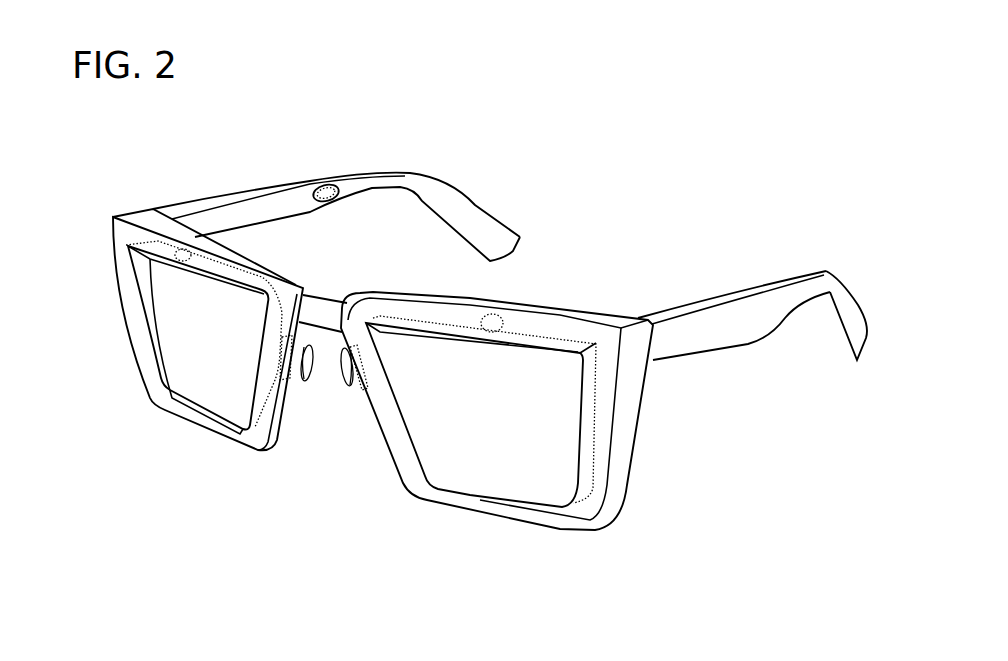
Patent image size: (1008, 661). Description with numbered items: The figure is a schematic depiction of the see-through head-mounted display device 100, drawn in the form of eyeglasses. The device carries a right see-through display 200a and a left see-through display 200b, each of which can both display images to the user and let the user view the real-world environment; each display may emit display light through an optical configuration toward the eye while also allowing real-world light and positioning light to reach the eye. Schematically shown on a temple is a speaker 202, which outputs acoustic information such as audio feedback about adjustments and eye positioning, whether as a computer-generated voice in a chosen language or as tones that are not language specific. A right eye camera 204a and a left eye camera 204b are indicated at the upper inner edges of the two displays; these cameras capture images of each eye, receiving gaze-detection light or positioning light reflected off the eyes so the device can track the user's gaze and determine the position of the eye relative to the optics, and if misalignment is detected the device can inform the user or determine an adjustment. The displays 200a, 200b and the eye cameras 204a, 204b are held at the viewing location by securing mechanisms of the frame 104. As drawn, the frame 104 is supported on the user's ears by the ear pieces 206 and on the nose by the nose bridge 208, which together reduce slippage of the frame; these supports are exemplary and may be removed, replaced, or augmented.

The see-through head-mounted display device 100 is at (637, 118).
The frame 104 is at (120, 205).
The right see-through display 200a is at (140, 324).
The left see-through display 200b is at (435, 500).
The speakers 202 is at (312, 182).
The right eye camera 204a is at (203, 246).
The left eye camera 204b is at (497, 305).
The ear pieces 206 is at (447, 170).
The nose bridge 208 is at (330, 280).